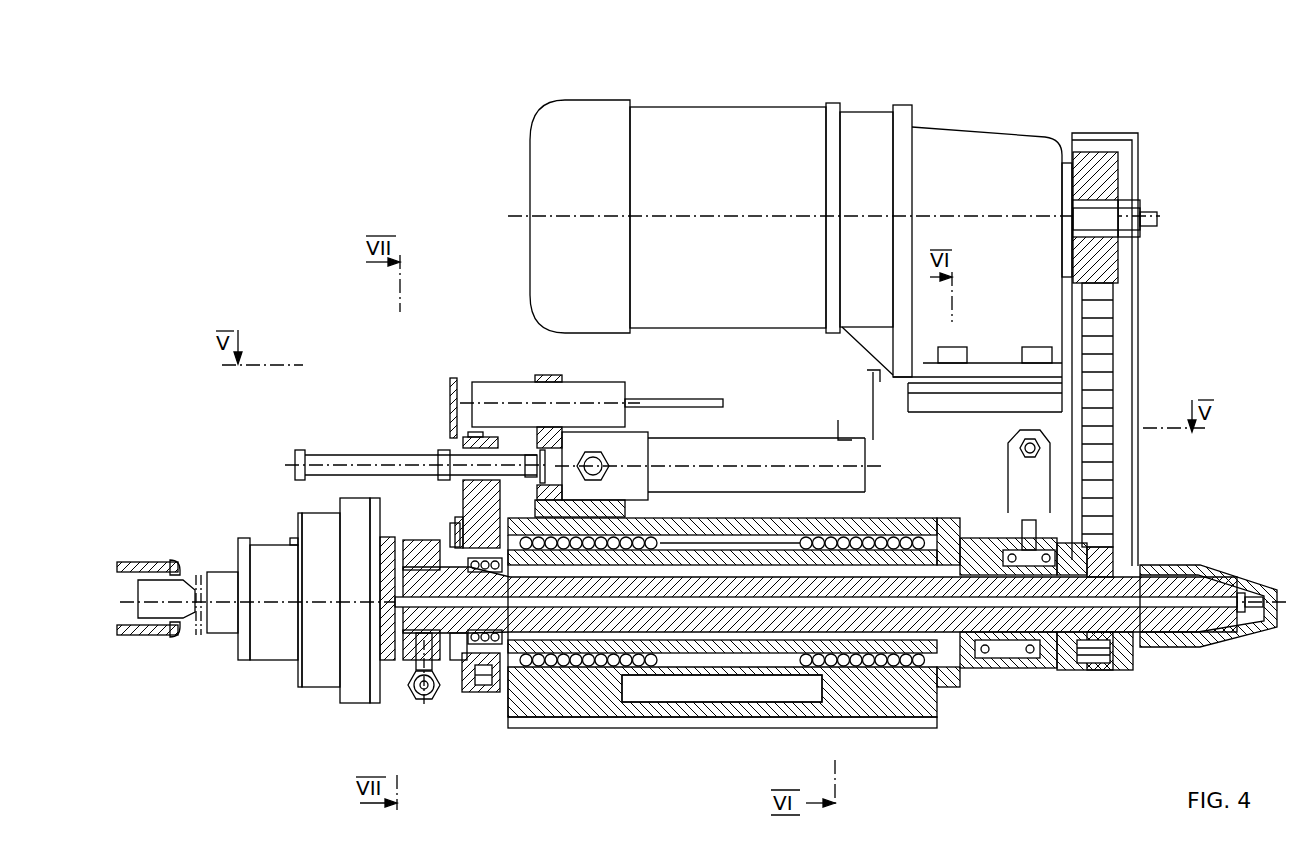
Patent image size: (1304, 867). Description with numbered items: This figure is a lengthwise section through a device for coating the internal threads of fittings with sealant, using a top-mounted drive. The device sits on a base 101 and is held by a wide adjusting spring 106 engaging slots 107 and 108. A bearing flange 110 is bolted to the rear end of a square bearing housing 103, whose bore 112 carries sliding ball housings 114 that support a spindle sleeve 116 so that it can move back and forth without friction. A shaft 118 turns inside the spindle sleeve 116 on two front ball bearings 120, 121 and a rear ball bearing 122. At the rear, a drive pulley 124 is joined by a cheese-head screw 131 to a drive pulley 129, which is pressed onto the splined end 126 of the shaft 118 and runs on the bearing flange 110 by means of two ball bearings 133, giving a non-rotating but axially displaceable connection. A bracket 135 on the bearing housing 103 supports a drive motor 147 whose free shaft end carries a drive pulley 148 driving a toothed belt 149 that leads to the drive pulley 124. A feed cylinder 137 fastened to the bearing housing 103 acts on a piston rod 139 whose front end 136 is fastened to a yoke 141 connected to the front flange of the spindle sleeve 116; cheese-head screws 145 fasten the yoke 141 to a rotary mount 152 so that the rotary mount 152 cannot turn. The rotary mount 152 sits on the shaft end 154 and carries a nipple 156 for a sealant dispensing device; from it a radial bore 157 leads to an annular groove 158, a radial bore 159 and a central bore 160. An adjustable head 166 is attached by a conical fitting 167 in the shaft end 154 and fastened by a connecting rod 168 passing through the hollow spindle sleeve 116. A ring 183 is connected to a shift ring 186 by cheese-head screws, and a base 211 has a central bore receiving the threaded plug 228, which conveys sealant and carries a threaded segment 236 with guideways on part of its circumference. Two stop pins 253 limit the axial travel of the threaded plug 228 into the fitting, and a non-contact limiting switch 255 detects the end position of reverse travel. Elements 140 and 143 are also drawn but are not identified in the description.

The drive motor 147 is at (718, 122).
The drive pulley 148 is at (1108, 186).
The toothed belt 149 is at (1105, 327).
The bracket 135 is at (952, 407).
The feed cylinder 137 is at (767, 440).
The non-contact limiting switch 255 is at (598, 390).
The piston rod 139 is at (545, 378).
The front end of piston rod 136 is at (502, 465).
The yoke 141 is at (477, 437).
The nut 140 is at (440, 443).
The cheese-head screws 145 is at (446, 512).
The stop pins 253 is at (377, 460).
The conical fitting 167 is at (397, 510).
The central bore 160 is at (410, 512).
The radial bore 159 is at (425, 514).
The annular groove 158 is at (438, 514).
The threaded segment 236 is at (172, 573).
The base 211 is at (220, 580).
The ring 183 is at (304, 528).
The threaded plug 228 is at (160, 612).
The shift ring 186 is at (316, 580).
The adjustable head 166 is at (282, 655).
The shaft end 154 is at (413, 623).
The rotary mount 152 is at (408, 657).
The nipple 156 is at (417, 698).
The radial bore 157 is at (428, 705).
The guide block 143 is at (473, 680).
The front ball bearing 120 is at (483, 675).
The front ball bearing 121 is at (507, 739).
The sliding ball housings 114 is at (582, 665).
The base 101 is at (608, 705).
The spindle sleeve 116 is at (687, 647).
The bore 112 is at (703, 660).
The wide adjusting spring 106 is at (727, 690).
The slot 108 is at (833, 700).
The slot 107 is at (898, 688).
The square bearing housing 103 is at (952, 685).
The bearing flange 110 is at (985, 640).
The rear ball bearing 122 is at (1000, 645).
The drive pulley 124 is at (1100, 657).
The cheese-head screw 131 is at (1120, 640).
The splined end of shaft 126 is at (1213, 620).
The shaft 118 is at (880, 587).
The connecting rod 168 is at (912, 600).
The drive pulley 129 is at (997, 570).
The ball bearings 133 is at (1005, 563).